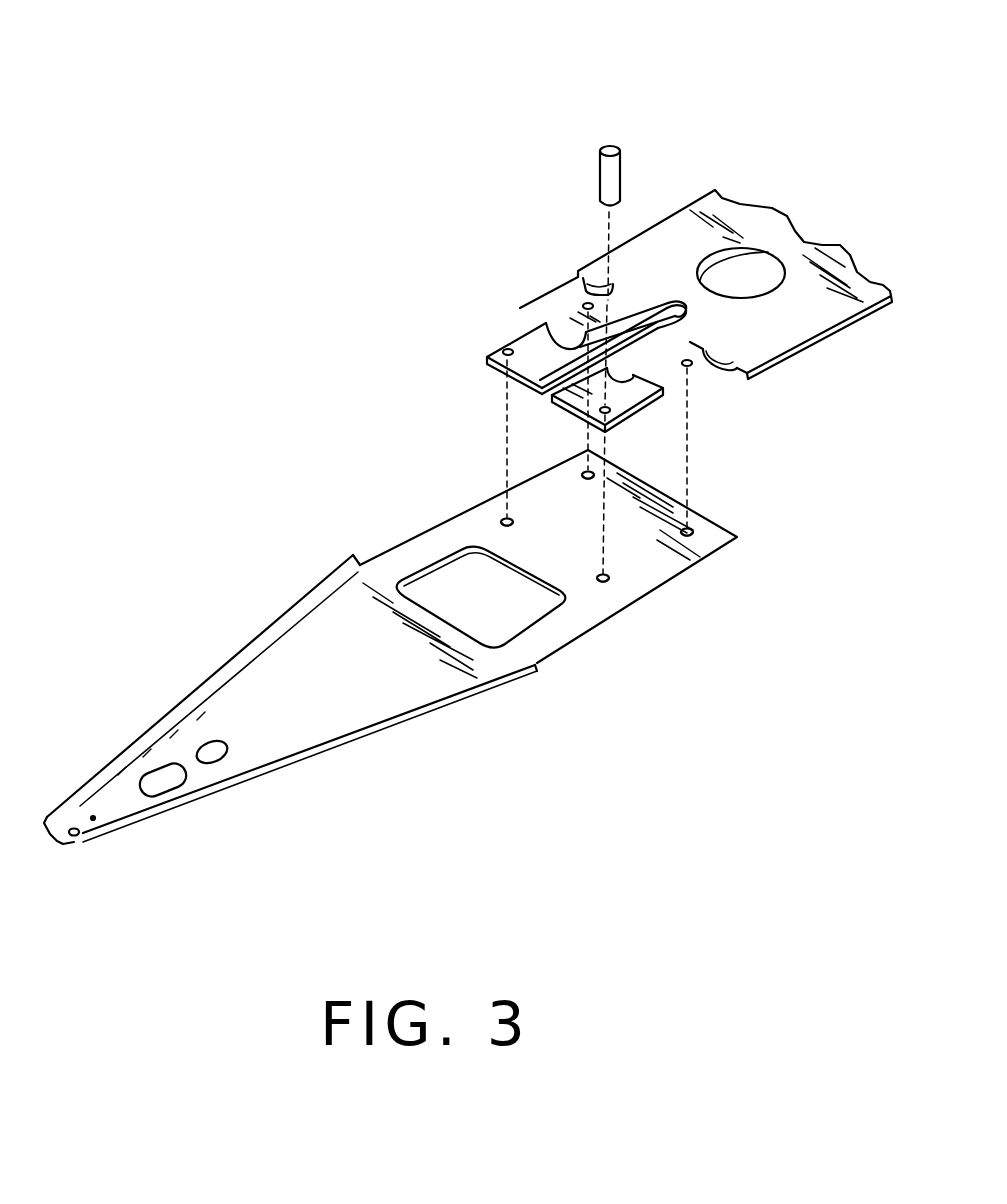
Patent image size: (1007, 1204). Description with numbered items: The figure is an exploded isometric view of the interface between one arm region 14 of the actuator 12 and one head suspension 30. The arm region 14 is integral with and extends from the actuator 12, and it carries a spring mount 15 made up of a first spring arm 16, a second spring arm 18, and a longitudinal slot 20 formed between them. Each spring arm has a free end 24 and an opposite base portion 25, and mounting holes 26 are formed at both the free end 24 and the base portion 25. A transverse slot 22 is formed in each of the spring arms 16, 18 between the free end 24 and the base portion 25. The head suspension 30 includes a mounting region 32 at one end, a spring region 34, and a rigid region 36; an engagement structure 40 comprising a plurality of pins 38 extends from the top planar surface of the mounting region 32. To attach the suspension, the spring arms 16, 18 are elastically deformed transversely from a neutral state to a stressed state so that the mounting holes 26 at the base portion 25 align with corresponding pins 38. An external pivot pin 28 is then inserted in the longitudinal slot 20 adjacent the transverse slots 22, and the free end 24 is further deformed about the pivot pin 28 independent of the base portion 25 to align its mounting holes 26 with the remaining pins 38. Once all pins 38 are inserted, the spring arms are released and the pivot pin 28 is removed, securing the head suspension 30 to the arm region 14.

The actuator 12 is at (768, 227).
The arm region 14 is at (817, 317).
The spring mount 15 is at (633, 298).
The first spring arm 16 is at (613, 293).
The second spring arm 18 is at (703, 330).
The longitudinal slot 20 is at (602, 428).
The transverse slot 22 is at (508, 350).
The free end 24 is at (523, 358).
The base portion 25 is at (672, 298).
The mounting hole 26 is at (546, 322).
The pivot pin 28 is at (603, 175).
The head suspension 30 is at (317, 545).
The mounting region 32 is at (660, 565).
The spring region 34 is at (533, 648).
The rigid region 36 is at (317, 723).
The pin 38 is at (588, 475).
The engagement structure 40 is at (697, 530).